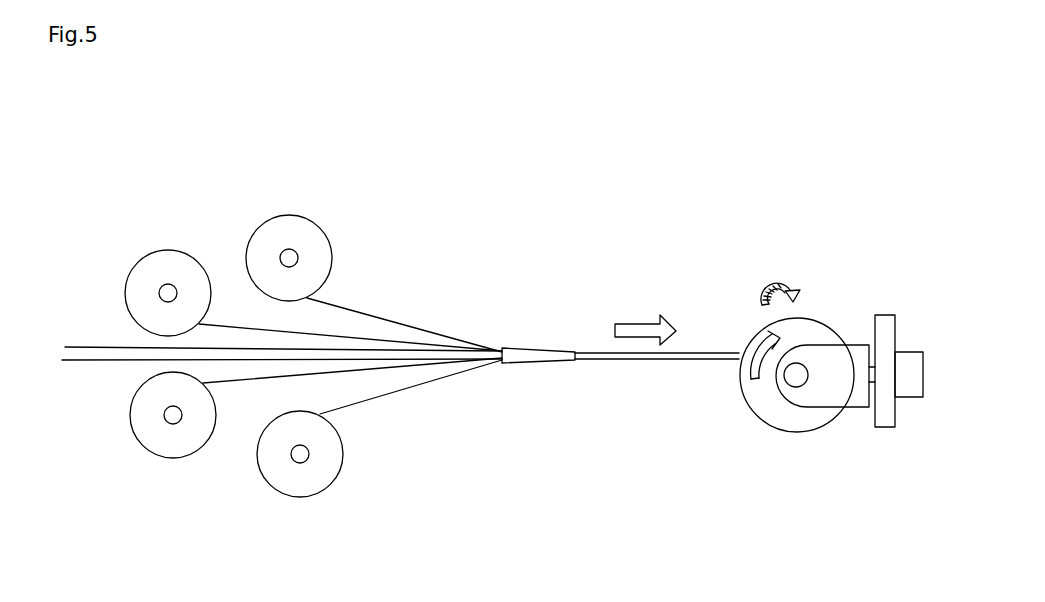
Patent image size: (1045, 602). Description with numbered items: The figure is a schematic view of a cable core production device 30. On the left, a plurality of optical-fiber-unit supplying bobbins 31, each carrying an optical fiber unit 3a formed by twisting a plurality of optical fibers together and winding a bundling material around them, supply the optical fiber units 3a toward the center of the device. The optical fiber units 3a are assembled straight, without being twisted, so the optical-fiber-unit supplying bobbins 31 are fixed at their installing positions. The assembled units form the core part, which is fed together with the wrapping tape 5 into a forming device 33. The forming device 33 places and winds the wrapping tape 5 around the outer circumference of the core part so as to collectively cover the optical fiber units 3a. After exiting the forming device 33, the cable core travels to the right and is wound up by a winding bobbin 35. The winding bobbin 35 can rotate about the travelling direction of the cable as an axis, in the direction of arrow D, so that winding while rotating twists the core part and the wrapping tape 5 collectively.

The wrapping tape 5 is at (100, 352).
The cable core production device 30 is at (528, 165).
The optical-fiber-unit supplying bobbin 31 is at (283, 483).
The optical fiber unit 3a is at (383, 400).
The forming device 33 is at (512, 352).
The winding bobbin 35 is at (793, 423).